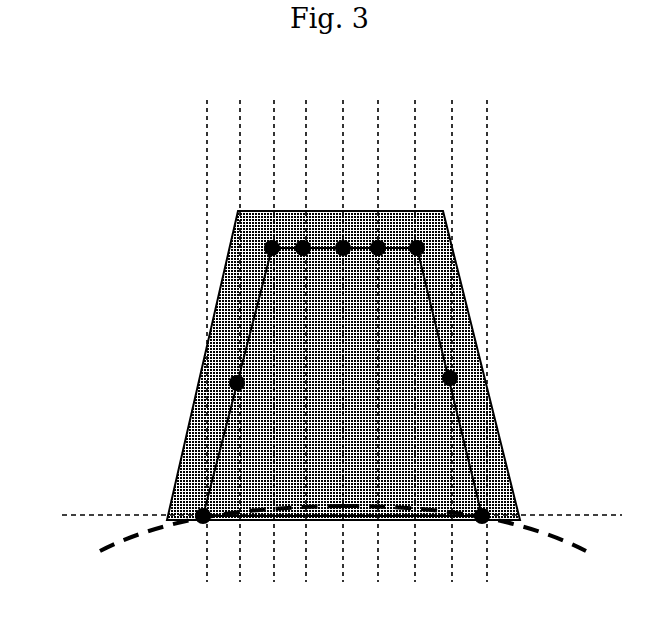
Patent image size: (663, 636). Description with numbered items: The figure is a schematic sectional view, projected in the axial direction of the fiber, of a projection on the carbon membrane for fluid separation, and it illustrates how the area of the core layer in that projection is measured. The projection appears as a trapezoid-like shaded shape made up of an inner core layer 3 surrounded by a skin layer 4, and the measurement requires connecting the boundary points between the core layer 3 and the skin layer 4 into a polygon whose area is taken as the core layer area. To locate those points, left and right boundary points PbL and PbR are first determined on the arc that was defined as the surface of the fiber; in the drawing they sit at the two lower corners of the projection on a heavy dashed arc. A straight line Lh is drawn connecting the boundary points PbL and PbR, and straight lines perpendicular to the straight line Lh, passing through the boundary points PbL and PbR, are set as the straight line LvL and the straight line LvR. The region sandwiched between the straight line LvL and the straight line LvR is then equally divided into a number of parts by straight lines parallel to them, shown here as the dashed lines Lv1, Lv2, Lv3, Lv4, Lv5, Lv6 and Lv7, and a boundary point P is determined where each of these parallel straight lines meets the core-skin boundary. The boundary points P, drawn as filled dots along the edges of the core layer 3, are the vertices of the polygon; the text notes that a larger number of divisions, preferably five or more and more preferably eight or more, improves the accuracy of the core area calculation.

The core layer 3 is at (323, 488).
The skin layer 4 is at (477, 445).
The boundary points P is at (303, 246).
The left boundary point PbL is at (203, 518).
The right boundary point PbR is at (482, 518).
The straight line Lh is at (320, 518).
The straight line LvL is at (206, 317).
The parallel straight line Lv1 is at (235, 366).
The parallel straight line Lv2 is at (275, 317).
The parallel straight line Lv3 is at (307, 366).
The parallel straight line Lv4 is at (345, 317).
The parallel straight line Lv5 is at (375, 366).
The parallel straight line Lv6 is at (417, 317).
The parallel straight line Lv7 is at (449, 366).
The straight line LvR is at (487, 317).